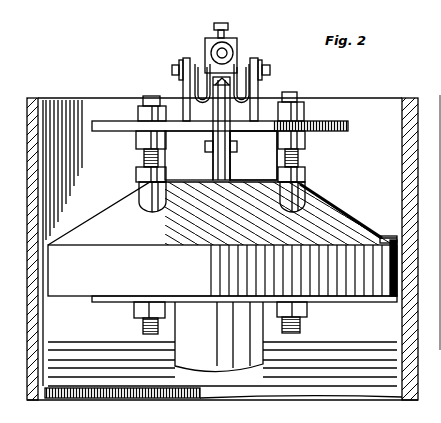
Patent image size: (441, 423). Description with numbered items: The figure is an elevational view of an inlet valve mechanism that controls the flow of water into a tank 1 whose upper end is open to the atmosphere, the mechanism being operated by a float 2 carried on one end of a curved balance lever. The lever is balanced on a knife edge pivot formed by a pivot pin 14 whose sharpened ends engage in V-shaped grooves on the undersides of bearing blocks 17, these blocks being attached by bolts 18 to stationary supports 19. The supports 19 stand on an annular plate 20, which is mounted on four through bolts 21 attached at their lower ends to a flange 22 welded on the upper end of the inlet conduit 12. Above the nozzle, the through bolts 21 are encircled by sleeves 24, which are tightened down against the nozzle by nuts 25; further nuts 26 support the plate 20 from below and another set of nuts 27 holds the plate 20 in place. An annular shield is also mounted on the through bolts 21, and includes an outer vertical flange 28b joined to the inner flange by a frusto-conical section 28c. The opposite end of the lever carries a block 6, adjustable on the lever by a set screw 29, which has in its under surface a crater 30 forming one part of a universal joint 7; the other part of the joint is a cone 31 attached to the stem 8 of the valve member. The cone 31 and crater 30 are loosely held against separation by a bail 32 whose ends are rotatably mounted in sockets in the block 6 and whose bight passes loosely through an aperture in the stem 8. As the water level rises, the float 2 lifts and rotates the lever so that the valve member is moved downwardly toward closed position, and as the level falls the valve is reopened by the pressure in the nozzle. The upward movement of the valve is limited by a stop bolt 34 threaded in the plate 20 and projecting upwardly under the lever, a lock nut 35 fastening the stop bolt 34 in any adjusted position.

The tank 1 is at (397, 108).
The float 2 is at (392, 240).
The block 6 is at (238, 45).
The universal joint 7 is at (200, 88).
The stem 8 is at (212, 161).
The inlet conduit 12 is at (187, 338).
The pivot pin 14 is at (210, 80).
The bearing blocks 17 is at (185, 60).
The bolts 18 is at (172, 70).
The stationary supports 19 is at (181, 66).
The annular plate 20 is at (100, 122).
The through bolts 21 is at (143, 99).
The flange 22 is at (104, 304).
The sleeves 24 is at (166, 198).
The nuts 25 is at (136, 174).
The nuts 26 is at (136, 141).
The nuts 27 is at (138, 114).
The outer vertical flange 28b is at (62, 290).
The frusto-conical section 28c is at (222, 213).
The set screw 29 is at (230, 26).
The crater 30 is at (204, 55).
The cone 31 is at (247, 81).
The bail 32 is at (222, 77).
The stop bolt 34 is at (237, 150).
The lock nut 35 is at (237, 147).